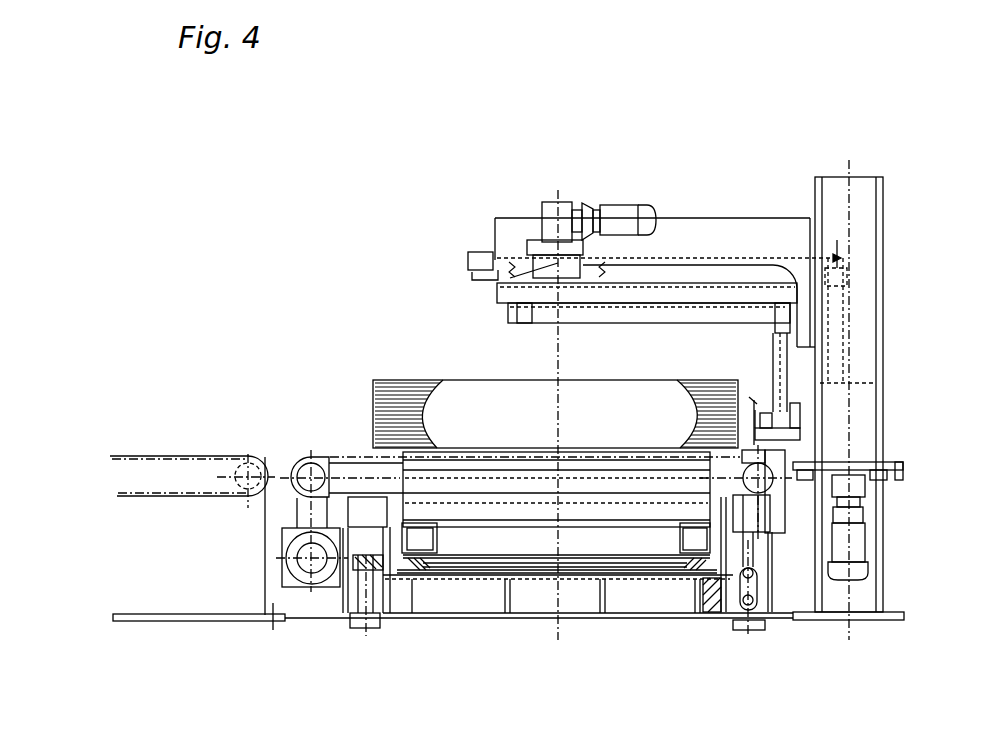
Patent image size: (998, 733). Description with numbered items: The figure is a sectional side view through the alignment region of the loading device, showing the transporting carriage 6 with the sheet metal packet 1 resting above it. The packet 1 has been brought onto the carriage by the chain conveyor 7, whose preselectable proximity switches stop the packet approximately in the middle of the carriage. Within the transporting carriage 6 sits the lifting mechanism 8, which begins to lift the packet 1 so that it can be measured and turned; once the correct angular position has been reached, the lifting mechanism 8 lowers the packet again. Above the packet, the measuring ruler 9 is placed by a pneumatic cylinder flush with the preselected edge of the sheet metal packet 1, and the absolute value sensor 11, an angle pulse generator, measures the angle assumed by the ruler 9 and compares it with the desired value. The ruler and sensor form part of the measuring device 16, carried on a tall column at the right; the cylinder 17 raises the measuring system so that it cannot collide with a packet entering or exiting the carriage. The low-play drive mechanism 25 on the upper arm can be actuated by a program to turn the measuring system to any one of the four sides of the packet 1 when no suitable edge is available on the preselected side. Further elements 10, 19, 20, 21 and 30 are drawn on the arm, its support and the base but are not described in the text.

The sheet metal packet 1 is at (486, 410).
The transporting carriage 6 is at (334, 607).
The chain conveyor 7 is at (345, 472).
The lifting mechanism 8 is at (735, 593).
The measuring ruler 9 is at (756, 405).
The pneumatic cylinder 10 is at (652, 312).
The absolute value sensor 11 is at (800, 420).
The measuring device 16 is at (892, 225).
The cylinder 17 is at (840, 350).
The slide rail 19 is at (600, 293).
The clamp block 20 is at (497, 283).
The support plate 21 is at (902, 477).
The low-play drive mechanism 25 is at (537, 247).
The holder 30 is at (800, 407).